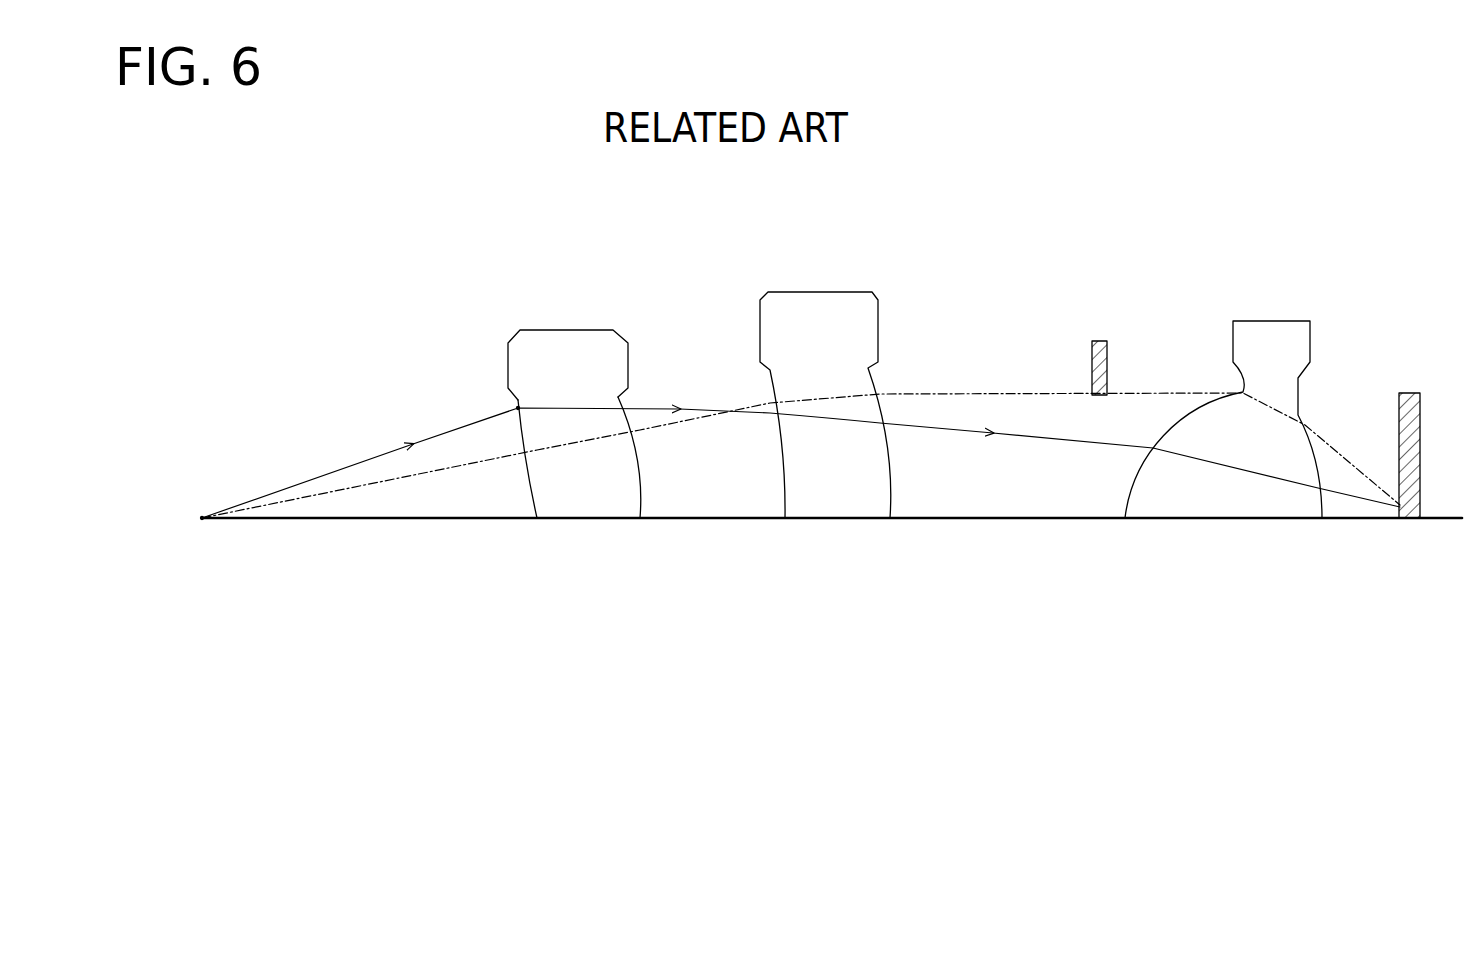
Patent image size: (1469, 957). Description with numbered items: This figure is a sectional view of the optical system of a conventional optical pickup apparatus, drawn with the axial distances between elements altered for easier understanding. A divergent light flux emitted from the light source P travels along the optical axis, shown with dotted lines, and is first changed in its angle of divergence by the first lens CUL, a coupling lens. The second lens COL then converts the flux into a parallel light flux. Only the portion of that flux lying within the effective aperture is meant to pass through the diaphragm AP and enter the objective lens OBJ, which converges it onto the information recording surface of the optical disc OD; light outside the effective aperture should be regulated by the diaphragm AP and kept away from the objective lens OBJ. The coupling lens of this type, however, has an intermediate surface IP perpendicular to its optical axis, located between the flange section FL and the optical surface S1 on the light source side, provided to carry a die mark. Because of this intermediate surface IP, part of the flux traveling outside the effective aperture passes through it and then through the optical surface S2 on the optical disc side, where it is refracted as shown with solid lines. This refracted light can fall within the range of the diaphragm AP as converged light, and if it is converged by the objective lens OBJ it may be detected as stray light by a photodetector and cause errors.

The light source P is at (203, 516).
The intermediate surface IP is at (517, 408).
The flange section FL is at (507, 357).
The first lens CUL is at (558, 415).
The optical surface on the light source side S1 is at (530, 488).
The optical surface on the optical disc side S2 is at (640, 488).
The second lens COL is at (813, 291).
The diaphragm AP is at (1099, 340).
The objective lens OBJ is at (1270, 320).
The optical disc OD is at (1408, 392).